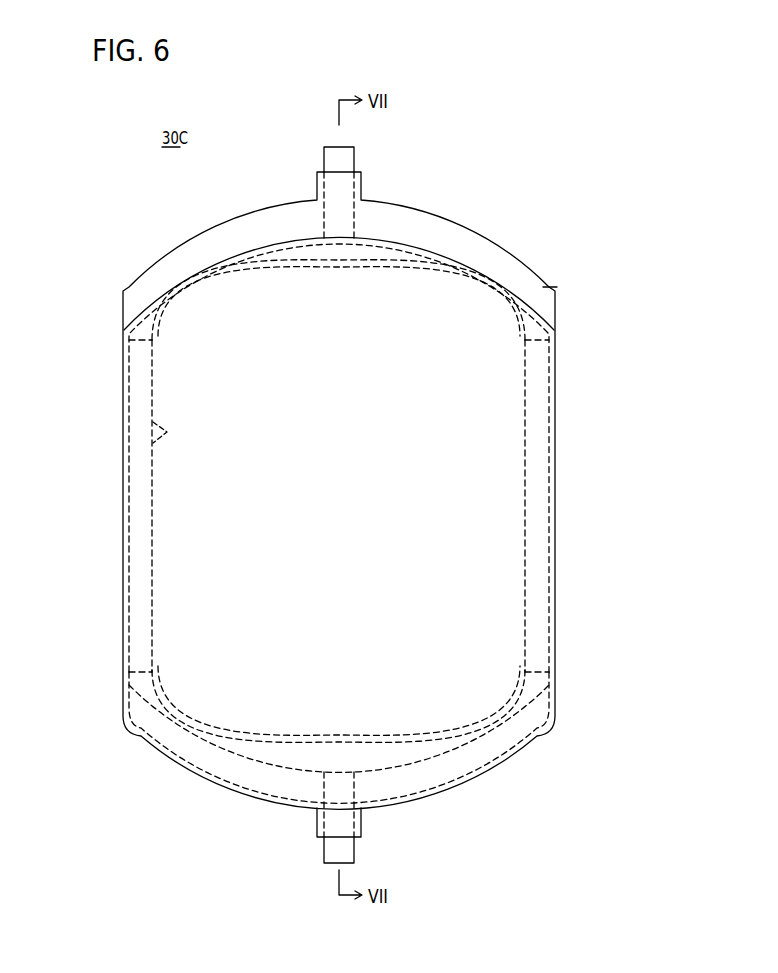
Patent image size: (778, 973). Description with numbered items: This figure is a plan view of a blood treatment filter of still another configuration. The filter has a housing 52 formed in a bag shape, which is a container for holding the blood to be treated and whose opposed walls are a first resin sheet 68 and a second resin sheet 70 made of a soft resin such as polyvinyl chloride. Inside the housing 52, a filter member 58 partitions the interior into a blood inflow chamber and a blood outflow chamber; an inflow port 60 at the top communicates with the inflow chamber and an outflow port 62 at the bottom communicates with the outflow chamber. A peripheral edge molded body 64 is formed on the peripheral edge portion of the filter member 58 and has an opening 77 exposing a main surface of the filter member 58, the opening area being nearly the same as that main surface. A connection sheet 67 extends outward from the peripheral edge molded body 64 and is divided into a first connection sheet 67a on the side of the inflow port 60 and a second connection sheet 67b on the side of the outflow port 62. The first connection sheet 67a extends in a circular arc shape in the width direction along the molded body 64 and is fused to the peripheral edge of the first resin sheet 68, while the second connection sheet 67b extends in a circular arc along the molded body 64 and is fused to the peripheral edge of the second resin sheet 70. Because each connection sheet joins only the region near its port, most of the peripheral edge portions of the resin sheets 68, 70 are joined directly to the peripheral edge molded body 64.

The housing 52 is at (294, 490).
The filter member 58 is at (158, 541).
The inflow port 60 is at (343, 162).
The outflow port 62 is at (343, 853).
The peripheral edge molded body 64 is at (140, 496).
The connection sheet 67 is at (393, 504).
The first connection sheet 67a is at (557, 288).
The second connection sheet 67b is at (556, 720).
The first resin sheet 68 is at (158, 612).
The second resin sheet 70 is at (170, 647).
The opening 77 is at (152, 424).